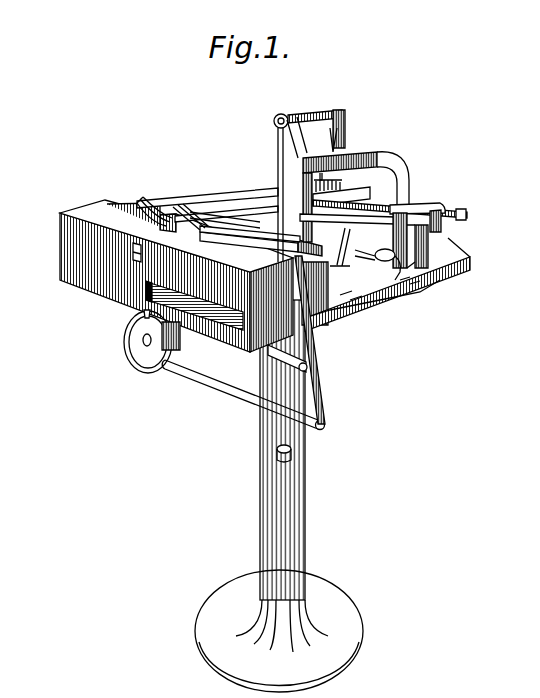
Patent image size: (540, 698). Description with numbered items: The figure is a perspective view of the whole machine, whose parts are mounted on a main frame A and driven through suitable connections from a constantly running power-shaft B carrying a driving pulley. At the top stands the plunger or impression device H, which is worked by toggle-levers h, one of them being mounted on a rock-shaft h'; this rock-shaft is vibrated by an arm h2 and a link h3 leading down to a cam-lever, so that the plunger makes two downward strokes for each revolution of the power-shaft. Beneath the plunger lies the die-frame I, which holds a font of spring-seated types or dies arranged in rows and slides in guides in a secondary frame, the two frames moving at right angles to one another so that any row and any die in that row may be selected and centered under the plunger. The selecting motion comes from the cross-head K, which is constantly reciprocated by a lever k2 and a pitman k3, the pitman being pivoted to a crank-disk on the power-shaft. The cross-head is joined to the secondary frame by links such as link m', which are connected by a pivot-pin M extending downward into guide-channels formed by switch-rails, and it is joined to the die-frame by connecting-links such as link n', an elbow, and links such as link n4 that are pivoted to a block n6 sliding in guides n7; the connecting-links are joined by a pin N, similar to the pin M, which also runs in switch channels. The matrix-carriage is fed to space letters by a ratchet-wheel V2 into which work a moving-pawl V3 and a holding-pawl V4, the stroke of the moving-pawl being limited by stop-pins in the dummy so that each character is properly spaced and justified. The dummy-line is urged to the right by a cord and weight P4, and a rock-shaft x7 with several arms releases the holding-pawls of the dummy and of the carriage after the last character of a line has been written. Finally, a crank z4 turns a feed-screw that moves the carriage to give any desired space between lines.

The main frame A is at (62, 238).
The crank z4 is at (128, 263).
The cross-head K is at (261, 248).
The power-shaft B is at (141, 343).
The pitman k3 is at (214, 378).
The lever k2 is at (322, 392).
The cord and weight P4 is at (277, 449).
The pin N is at (141, 203).
The pivot-pin M is at (180, 205).
The link m' is at (225, 198).
The connecting-link n' is at (218, 211).
The link h3 is at (248, 182).
The arm h2 is at (284, 113).
The rock-shaft h' is at (314, 122).
The toggle-levers h is at (344, 145).
The plunger or impression device H is at (378, 163).
The die-frame I is at (356, 194).
The rock-shaft x7 is at (347, 227).
The link n4 is at (428, 204).
The block n6 is at (456, 212).
The guides n7 is at (467, 215).
The holding-pawl V4 is at (362, 250).
The moving-pawl V3 is at (378, 258).
The ratchet-wheel V2 is at (405, 270).